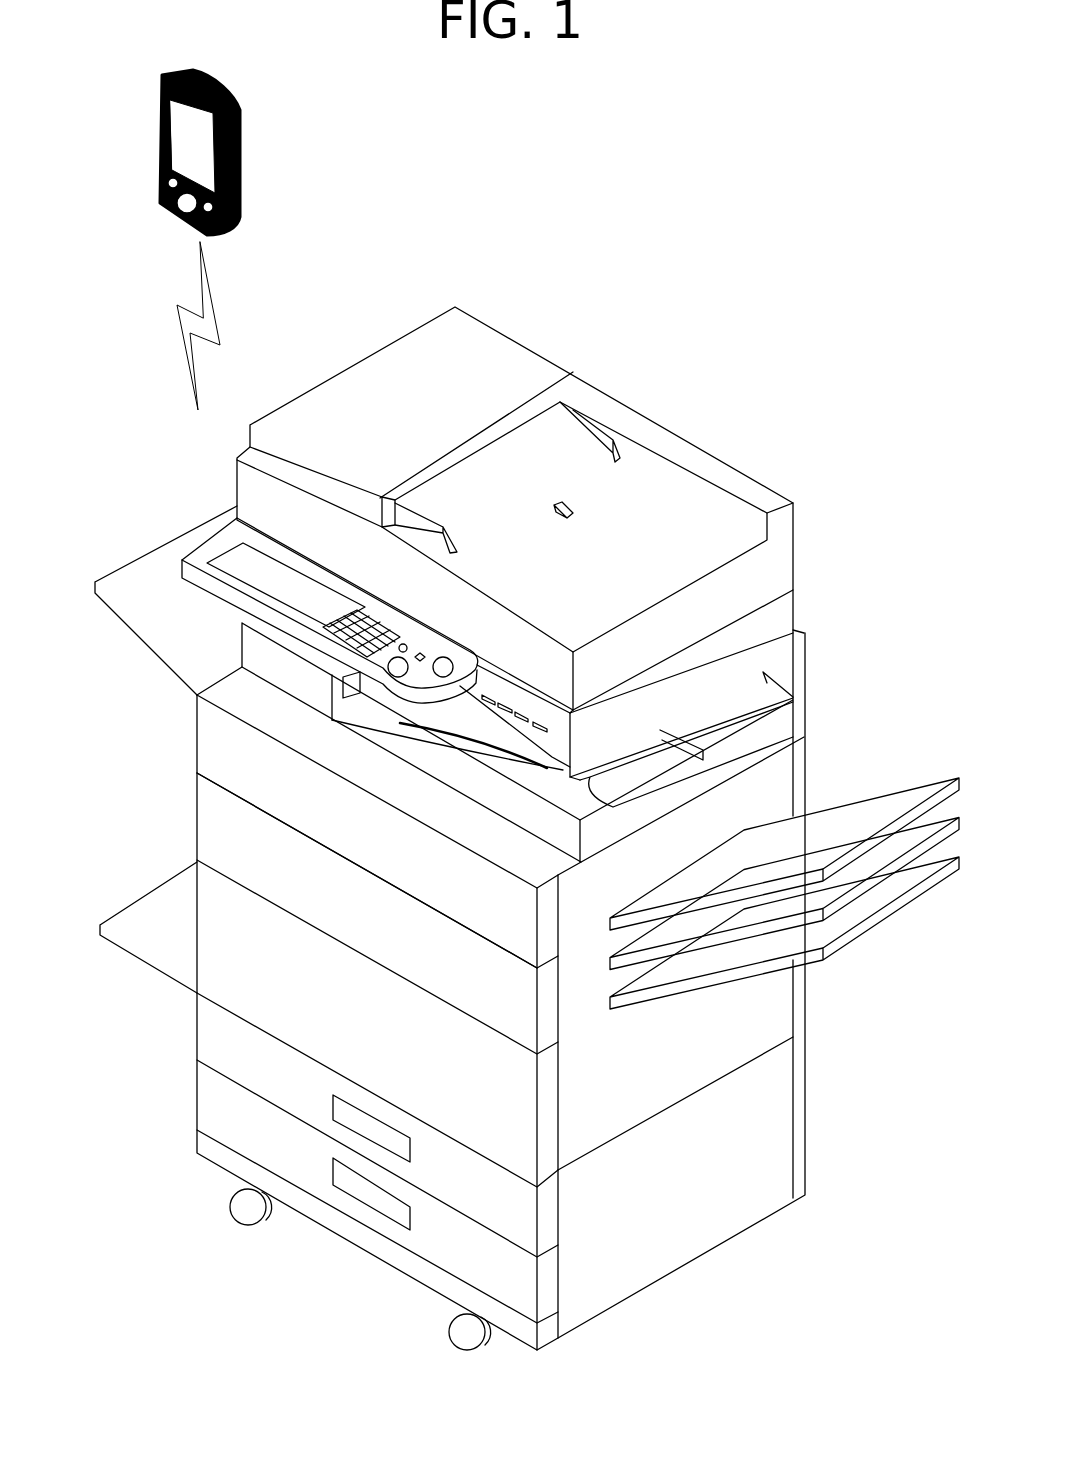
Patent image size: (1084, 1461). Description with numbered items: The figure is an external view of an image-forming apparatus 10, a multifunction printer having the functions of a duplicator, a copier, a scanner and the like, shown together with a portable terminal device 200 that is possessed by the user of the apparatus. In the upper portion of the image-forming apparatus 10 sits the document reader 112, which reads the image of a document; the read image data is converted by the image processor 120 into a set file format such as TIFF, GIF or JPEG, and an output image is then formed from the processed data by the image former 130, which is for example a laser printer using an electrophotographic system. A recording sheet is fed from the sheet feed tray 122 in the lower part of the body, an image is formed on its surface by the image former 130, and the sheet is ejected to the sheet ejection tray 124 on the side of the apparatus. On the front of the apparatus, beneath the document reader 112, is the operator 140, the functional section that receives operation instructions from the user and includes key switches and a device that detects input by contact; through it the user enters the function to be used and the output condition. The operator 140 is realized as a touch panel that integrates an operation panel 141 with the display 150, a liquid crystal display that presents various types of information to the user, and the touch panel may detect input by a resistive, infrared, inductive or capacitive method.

The image-forming apparatus 10 is at (500, 828).
The document reader 112 is at (813, 583).
The image processor 120 is at (183, 815).
The image former 130 is at (329, 865).
The sheet feed tray 122 is at (182, 1100).
The sheet ejection tray 124 is at (853, 775).
The operator 140 is at (260, 599).
The display 150 is at (243, 565).
The operation panel 141 is at (357, 628).
The portable terminal device 200 is at (258, 163).